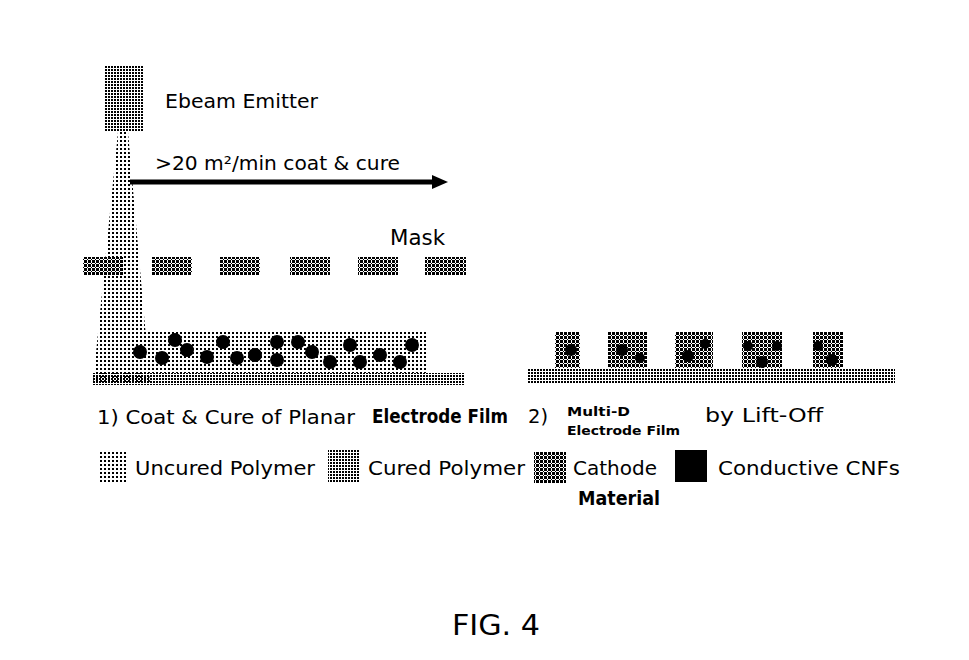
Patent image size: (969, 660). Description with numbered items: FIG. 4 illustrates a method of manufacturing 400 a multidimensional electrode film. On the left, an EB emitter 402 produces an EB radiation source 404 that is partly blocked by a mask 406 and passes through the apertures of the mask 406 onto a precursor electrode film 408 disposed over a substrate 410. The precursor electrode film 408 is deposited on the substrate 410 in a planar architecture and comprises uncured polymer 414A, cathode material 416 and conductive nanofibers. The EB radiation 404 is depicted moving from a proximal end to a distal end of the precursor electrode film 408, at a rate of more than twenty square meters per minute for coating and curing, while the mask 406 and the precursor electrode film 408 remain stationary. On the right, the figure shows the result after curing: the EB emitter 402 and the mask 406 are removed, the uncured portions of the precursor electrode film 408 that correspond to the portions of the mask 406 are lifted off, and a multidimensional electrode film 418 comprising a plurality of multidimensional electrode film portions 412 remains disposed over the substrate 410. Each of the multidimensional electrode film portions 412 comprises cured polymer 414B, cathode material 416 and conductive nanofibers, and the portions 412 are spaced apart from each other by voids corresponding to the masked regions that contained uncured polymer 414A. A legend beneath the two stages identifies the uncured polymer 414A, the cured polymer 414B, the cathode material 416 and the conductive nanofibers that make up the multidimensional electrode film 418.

The method of manufacturing 400 is at (660, 121).
The EB emitter 402 is at (333, 98).
The EB radiation source 404 is at (118, 228).
The mask 406 is at (453, 233).
The precursor electrode film 408 is at (437, 340).
The substrate 410 is at (100, 375).
The multidimensional electrode film portions 412 is at (833, 330).
The uncured polymer 414A is at (313, 337).
The cured polymer 414B is at (558, 357).
The cathode material 416 is at (387, 335).
The multidimensional electrode film 418 is at (222, 333).